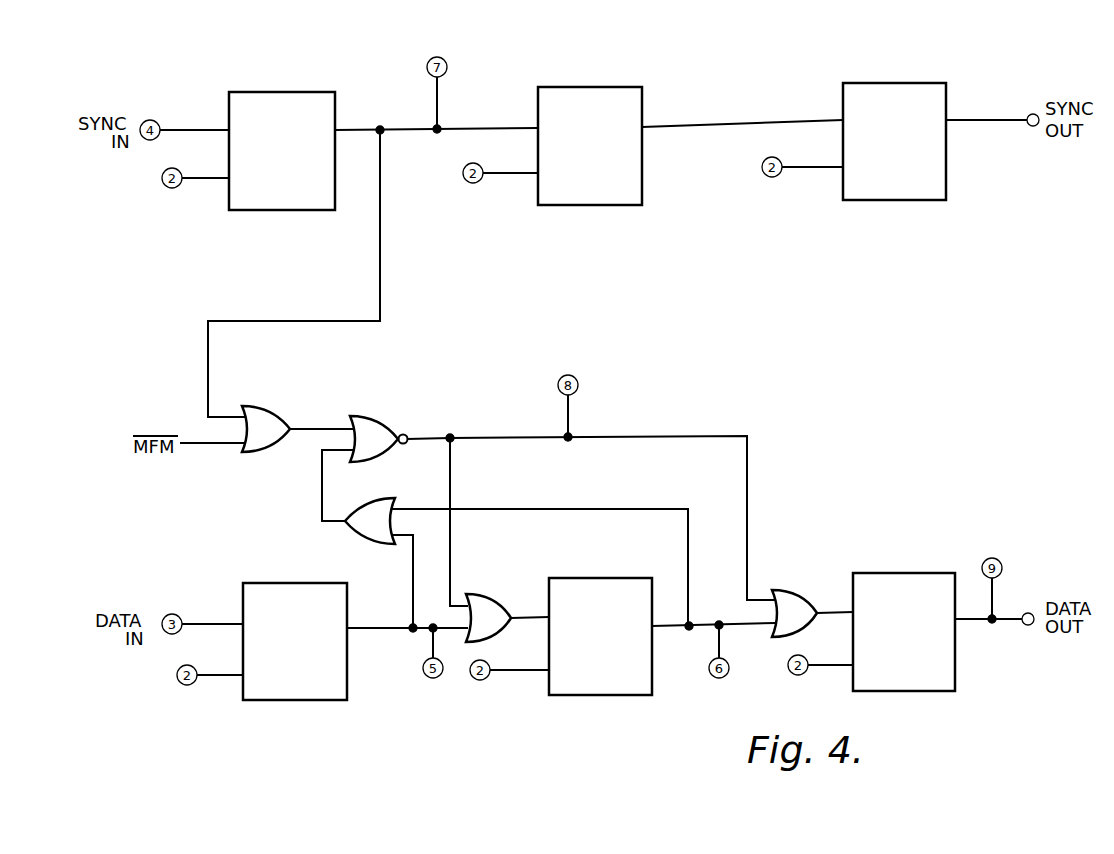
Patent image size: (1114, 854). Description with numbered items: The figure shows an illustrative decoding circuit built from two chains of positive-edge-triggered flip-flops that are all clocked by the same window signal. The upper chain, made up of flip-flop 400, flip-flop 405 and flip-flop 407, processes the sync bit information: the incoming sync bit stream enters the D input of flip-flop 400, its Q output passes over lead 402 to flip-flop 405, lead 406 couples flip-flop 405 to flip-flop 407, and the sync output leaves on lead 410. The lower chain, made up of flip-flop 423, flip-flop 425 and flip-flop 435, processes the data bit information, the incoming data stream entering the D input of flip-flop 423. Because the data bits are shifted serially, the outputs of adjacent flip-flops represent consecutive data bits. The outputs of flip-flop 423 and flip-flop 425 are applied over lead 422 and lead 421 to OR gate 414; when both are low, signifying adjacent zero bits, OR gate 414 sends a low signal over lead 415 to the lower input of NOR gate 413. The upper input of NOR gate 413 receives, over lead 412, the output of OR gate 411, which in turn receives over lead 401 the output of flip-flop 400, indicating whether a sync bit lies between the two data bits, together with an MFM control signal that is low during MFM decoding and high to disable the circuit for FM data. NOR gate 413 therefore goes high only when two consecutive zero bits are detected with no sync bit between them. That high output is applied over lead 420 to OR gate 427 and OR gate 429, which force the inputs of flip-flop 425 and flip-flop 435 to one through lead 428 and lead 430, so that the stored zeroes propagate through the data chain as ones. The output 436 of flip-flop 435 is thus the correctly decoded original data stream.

The D-type flip-flop 400 is at (273, 92).
The lead 401 is at (290, 321).
The conductor 402 is at (478, 127).
The D-type flip-flop 405 is at (585, 87).
The conductor 406 is at (708, 122).
The D-type flip-flop 407 is at (890, 83).
The sync out conductor 410 is at (980, 117).
The OR gate 411 is at (263, 406).
The lead 412 is at (310, 428).
The NOR gate 413 is at (373, 416).
The OR gate 414 is at (378, 498).
The lead 415 is at (322, 484).
The lead 420 is at (635, 435).
The lead 421 is at (505, 508).
The lead 422 is at (412, 567).
The D-type flip-flop 423 is at (287, 583).
The D-type flip-flop 425 is at (585, 578).
The OR gate 427 is at (485, 594).
The lead 428 is at (523, 620).
The OR gate 429 is at (775, 590).
The lead 430 is at (822, 610).
The D-type flip-flop 435 is at (883, 573).
The output 436 is at (990, 623).